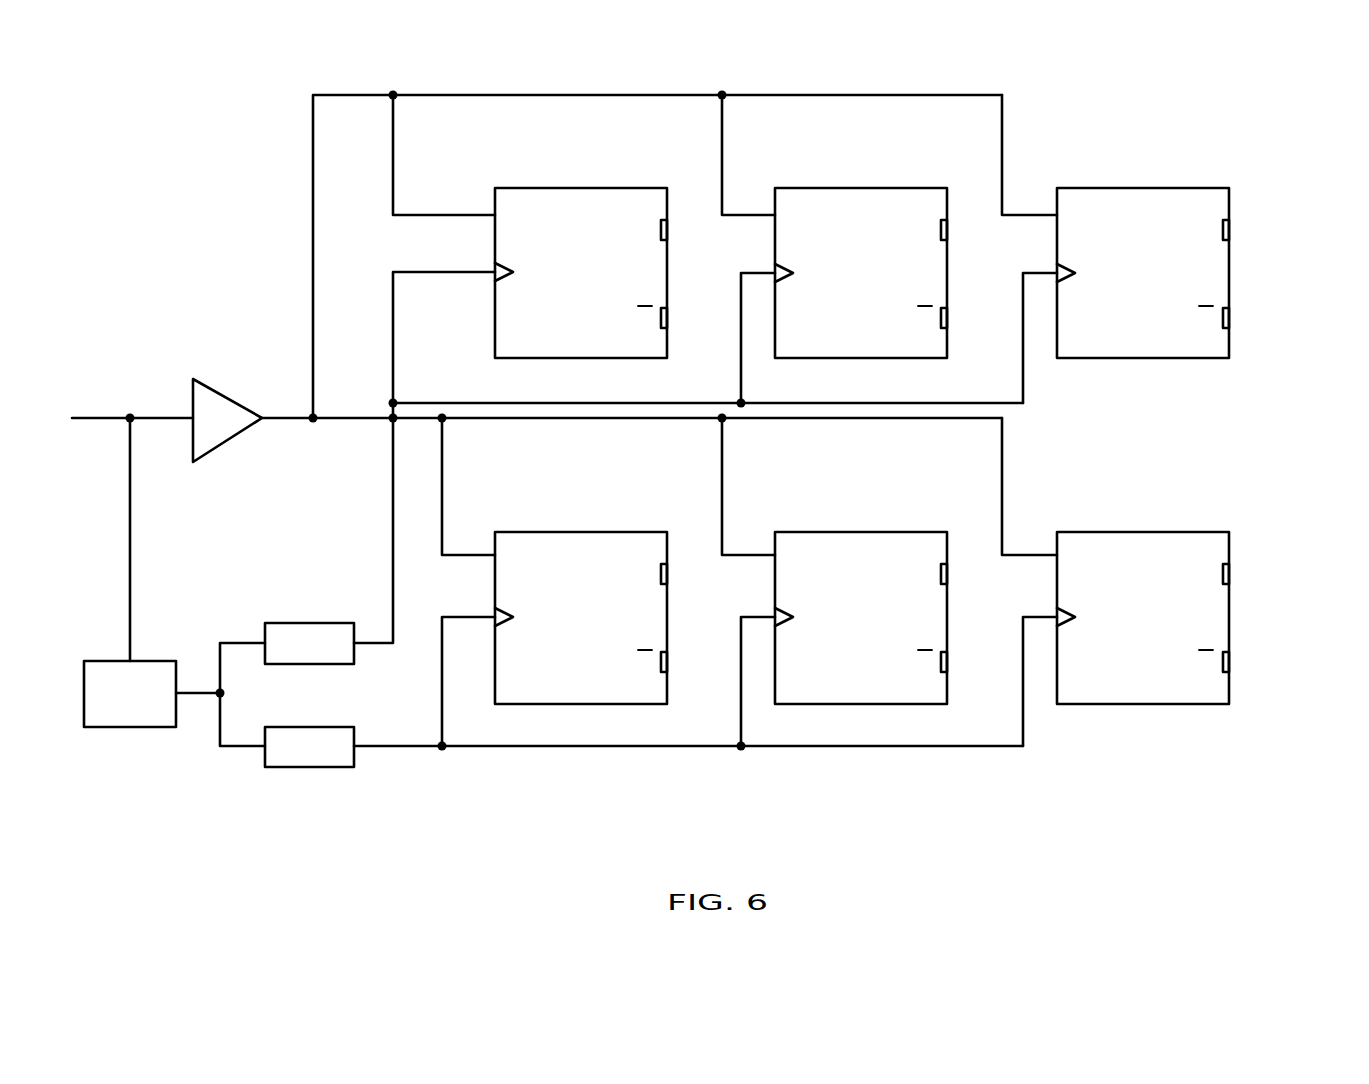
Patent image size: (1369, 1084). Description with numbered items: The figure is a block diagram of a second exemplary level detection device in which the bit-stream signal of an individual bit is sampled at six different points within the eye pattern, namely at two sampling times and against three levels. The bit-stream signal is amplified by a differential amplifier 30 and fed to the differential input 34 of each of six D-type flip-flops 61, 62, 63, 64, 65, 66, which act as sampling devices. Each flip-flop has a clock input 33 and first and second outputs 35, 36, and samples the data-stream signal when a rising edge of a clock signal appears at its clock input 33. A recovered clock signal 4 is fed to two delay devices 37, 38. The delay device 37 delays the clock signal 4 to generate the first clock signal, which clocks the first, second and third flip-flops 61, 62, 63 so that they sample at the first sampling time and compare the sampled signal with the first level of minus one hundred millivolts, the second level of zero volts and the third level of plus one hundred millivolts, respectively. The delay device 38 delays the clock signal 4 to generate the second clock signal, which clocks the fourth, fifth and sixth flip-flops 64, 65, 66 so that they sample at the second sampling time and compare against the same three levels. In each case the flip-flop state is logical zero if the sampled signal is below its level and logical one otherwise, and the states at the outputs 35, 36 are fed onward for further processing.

The clock signal 4 is at (130, 727).
The differential amplifier 30 is at (222, 393).
The clock input 33 is at (497, 276).
The differential input 34 is at (1057, 552).
The first output 35 is at (1229, 228).
The second output 36 is at (1229, 318).
The delay device 37 is at (312, 623).
The delay device 38 is at (278, 767).
The first flip-flop 61 is at (594, 188).
The second flip-flop 62 is at (878, 188).
The third flip-flop 63 is at (1158, 188).
The fourth flip-flop 64 is at (612, 532).
The fifth flip-flop 65 is at (876, 532).
The sixth flip-flop 66 is at (1156, 532).